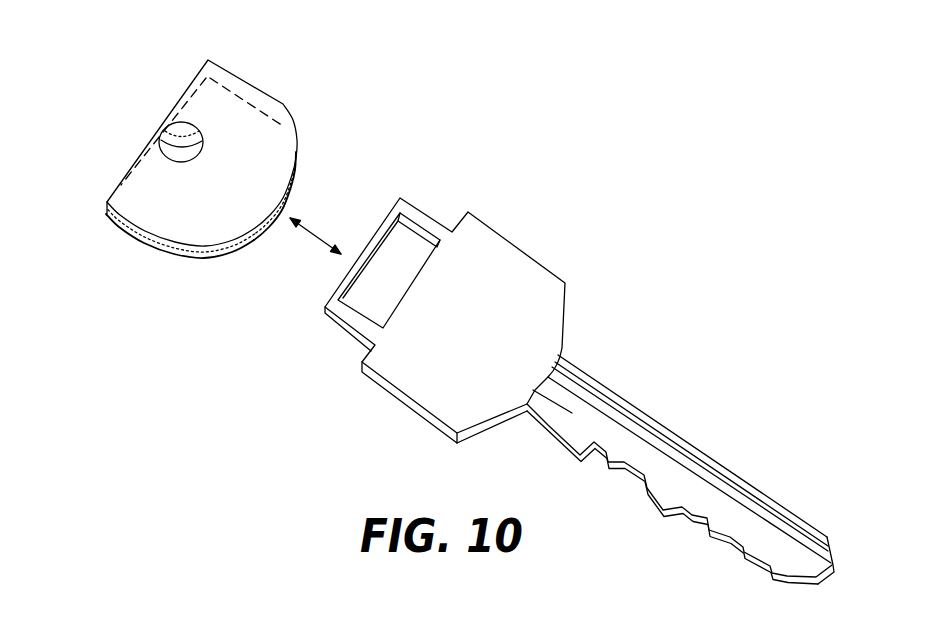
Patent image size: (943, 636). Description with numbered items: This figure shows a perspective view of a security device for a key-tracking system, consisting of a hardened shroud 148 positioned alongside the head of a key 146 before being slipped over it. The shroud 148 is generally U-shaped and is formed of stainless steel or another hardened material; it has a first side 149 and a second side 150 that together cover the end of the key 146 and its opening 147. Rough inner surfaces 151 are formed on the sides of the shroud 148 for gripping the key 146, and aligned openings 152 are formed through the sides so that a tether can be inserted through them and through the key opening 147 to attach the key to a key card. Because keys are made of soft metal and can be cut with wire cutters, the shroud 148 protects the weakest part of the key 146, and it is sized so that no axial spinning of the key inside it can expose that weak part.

The key 146 is at (523, 328).
The opening 147 is at (402, 262).
The shroud 148 is at (293, 98).
The first side 149 is at (241, 121).
The second side 150 is at (292, 197).
The rough inner surfaces 151 is at (191, 258).
The aligned openings 152 is at (180, 147).